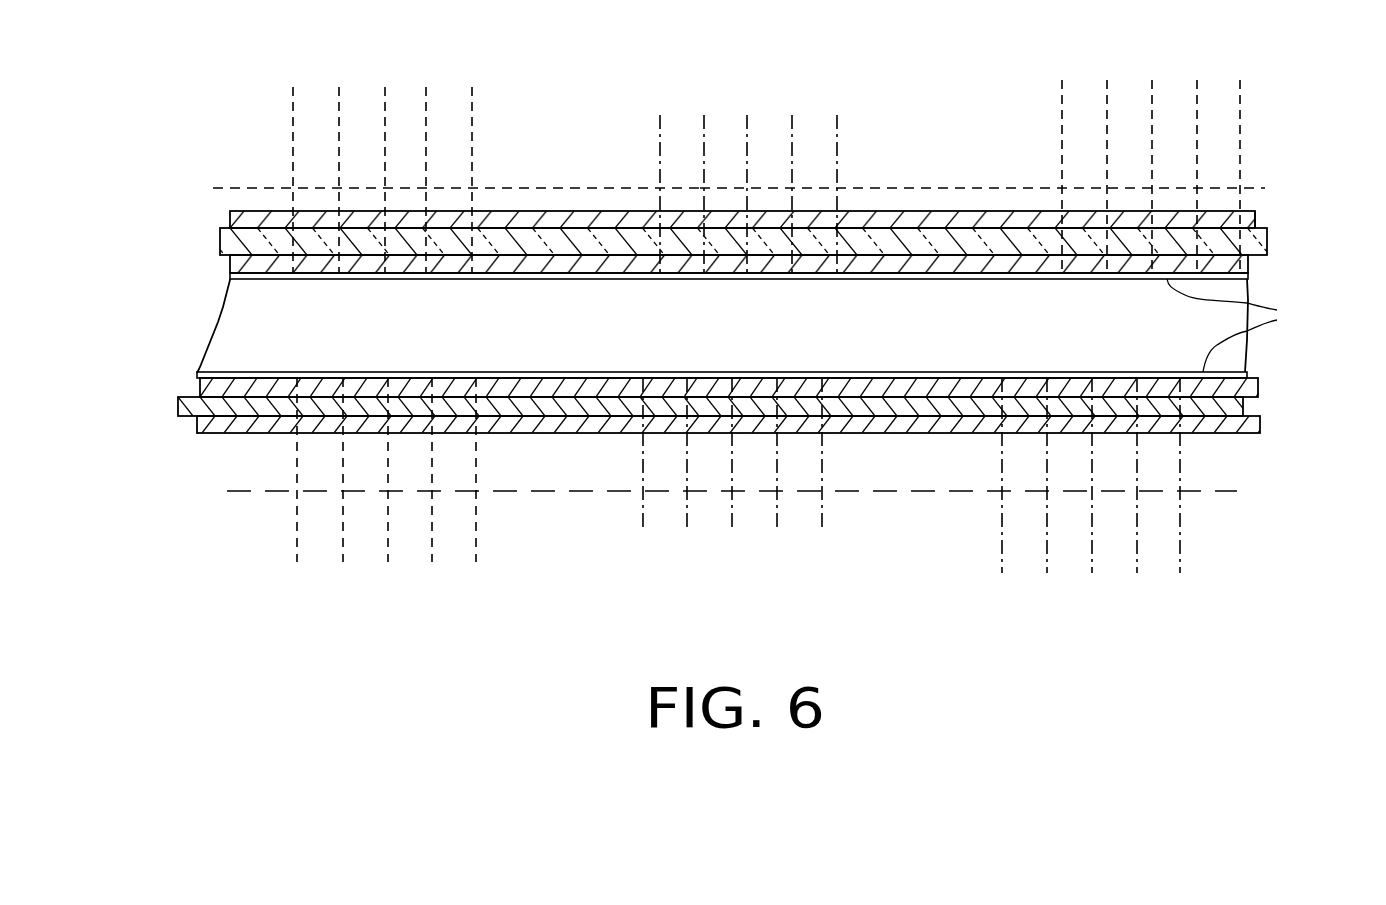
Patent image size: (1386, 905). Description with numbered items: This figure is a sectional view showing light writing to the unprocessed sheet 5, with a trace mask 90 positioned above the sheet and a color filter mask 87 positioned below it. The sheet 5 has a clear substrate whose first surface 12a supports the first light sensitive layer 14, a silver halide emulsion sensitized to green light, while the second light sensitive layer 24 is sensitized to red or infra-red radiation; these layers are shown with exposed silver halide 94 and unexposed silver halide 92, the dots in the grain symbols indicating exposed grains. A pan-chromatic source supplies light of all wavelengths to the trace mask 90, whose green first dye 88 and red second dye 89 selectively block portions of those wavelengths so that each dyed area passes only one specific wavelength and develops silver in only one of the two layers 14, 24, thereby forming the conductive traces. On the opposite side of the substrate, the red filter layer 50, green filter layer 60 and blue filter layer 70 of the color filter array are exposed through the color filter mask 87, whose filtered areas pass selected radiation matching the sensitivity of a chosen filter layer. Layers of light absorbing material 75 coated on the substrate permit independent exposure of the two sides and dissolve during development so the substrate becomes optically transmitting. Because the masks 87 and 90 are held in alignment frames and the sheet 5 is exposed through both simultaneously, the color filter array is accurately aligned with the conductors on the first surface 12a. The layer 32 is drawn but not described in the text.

The unprocessed sheet 5 is at (1283, 345).
The first surface of the substrate 12a is at (213, 320).
The first light sensitive layer 14 is at (1250, 265).
The second light sensitive layer 24 is at (1262, 220).
The polarizer core layer 32 is at (220, 243).
The red filter layer 50 is at (200, 383).
The green filter layer 60 is at (178, 410).
The blue filter layer 70 is at (198, 435).
The light absorbing material 75 is at (1248, 325).
The color filter mask 87 is at (1210, 492).
The green first dye 88 is at (277, 188).
The red second dye 89 is at (905, 186).
The trace mask 90 is at (220, 157).
The unexposed silver halide 92 is at (230, 265).
The exposed silver halide 94 is at (230, 220).